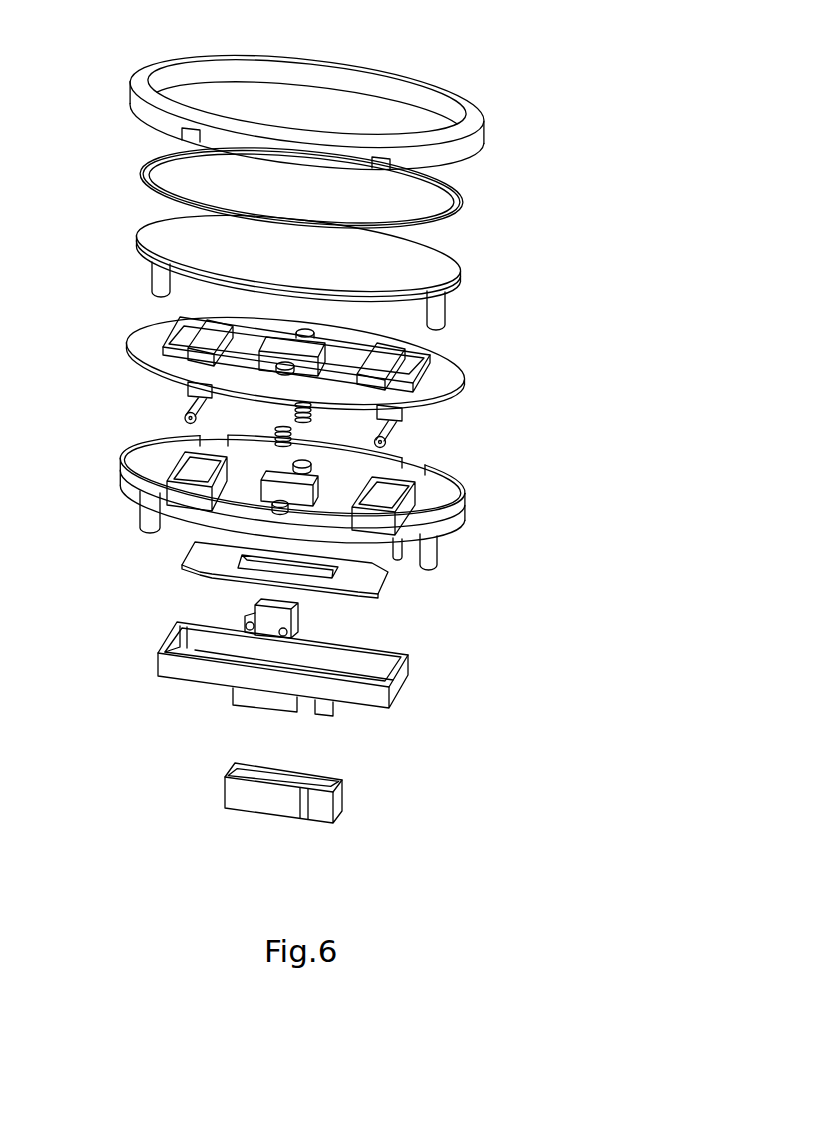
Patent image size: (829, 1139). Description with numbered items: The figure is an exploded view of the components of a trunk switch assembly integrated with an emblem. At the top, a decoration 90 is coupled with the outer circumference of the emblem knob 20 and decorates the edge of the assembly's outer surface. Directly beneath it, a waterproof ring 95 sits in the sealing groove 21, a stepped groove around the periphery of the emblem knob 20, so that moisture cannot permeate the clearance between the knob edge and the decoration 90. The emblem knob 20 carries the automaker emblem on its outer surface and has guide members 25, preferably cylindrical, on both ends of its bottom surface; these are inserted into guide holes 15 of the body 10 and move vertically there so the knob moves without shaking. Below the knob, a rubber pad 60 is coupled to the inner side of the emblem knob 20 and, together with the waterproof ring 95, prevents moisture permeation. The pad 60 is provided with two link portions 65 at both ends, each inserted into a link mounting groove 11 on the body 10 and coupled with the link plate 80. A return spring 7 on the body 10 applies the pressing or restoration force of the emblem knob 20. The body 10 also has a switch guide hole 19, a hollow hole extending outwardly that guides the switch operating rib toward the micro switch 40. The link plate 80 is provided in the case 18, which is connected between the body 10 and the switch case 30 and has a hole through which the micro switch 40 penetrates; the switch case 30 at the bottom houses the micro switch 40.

The decoration 90 is at (450, 92).
The waterproof ring 95 is at (463, 204).
The emblem knob 20 is at (163, 232).
The sealing groove 21 is at (463, 275).
The guide member 25 is at (158, 281).
The pad 60 is at (166, 362).
The link portion 65 is at (180, 389).
The return spring 7 is at (293, 437).
The switch guide hole 19 is at (403, 465).
The link mounting groove 11 is at (135, 468).
The body 10 is at (143, 488).
The guide hole 15 is at (152, 527).
The link plate 80 is at (388, 576).
The micro switch 40 is at (283, 623).
The case 18 is at (392, 663).
The switch case 30 is at (342, 783).